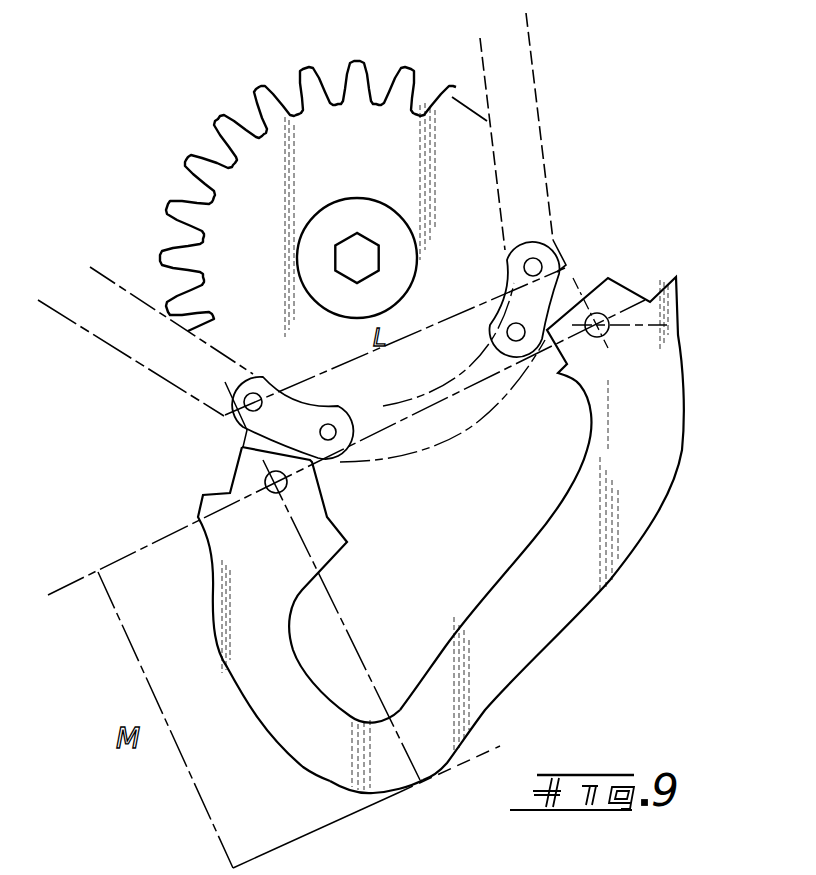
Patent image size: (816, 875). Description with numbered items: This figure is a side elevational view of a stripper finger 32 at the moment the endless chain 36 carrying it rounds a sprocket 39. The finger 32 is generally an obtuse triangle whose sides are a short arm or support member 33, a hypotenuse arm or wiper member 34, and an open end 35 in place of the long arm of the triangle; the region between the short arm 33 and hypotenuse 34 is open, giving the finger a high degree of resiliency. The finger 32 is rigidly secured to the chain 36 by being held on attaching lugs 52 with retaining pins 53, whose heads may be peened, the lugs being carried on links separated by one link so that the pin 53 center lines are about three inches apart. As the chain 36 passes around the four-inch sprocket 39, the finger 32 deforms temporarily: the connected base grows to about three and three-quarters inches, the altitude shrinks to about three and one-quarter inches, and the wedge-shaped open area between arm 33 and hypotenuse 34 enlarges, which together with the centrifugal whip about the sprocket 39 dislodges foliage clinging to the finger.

The stripper finger 32 is at (393, 806).
The short arm 33 is at (278, 688).
The hypotenuse 34 is at (558, 600).
The open end 35 is at (452, 465).
The endless chain 36 is at (512, 57).
The sprocket 39 is at (350, 167).
The attaching lug 52 is at (305, 440).
The retaining pin 53 is at (268, 490).